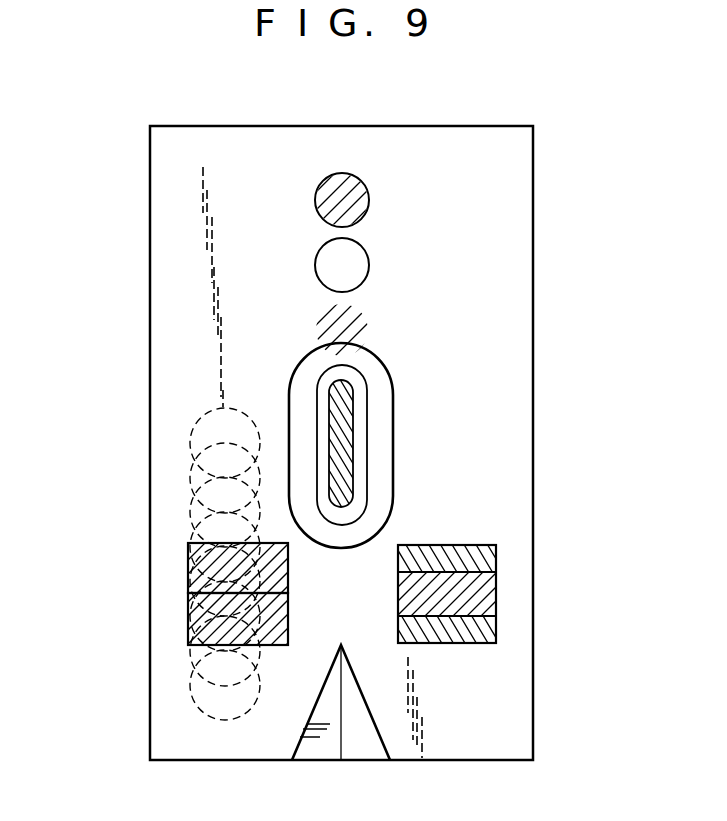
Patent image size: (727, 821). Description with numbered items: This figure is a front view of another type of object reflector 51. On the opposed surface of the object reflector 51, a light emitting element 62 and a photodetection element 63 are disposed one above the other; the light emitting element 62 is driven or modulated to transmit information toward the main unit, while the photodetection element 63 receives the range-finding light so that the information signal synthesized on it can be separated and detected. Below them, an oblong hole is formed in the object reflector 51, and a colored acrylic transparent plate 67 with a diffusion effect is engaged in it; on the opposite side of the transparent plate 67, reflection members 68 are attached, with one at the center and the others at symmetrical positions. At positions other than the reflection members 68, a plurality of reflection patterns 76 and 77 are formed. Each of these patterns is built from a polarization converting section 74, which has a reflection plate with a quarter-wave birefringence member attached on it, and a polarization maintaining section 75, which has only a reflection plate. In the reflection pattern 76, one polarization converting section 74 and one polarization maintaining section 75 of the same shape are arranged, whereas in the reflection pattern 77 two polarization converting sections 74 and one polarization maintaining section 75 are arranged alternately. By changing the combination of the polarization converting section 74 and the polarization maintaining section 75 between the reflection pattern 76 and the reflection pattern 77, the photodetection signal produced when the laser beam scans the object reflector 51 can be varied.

The object reflector 51 is at (437, 119).
The light emitting element 62 is at (367, 193).
The photodetection element 63 is at (367, 258).
The colored acrylic transparent plate 67 is at (378, 372).
The reflection members 68 is at (345, 417).
The polarization converting section 74 is at (190, 619).
The polarization maintaining section 75 is at (190, 554).
The reflection pattern 76 is at (178, 591).
The reflection pattern 77 is at (505, 553).